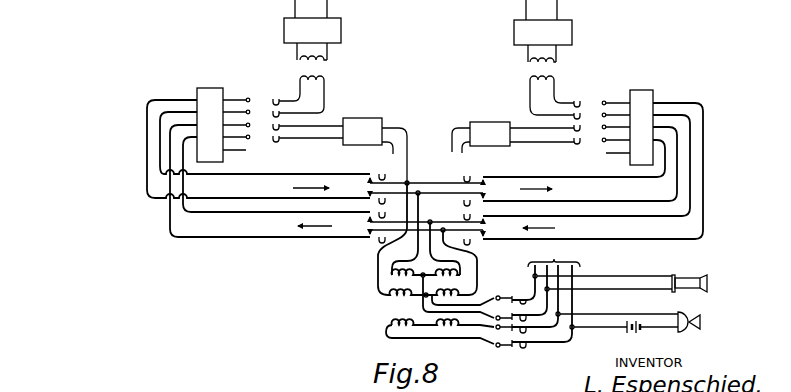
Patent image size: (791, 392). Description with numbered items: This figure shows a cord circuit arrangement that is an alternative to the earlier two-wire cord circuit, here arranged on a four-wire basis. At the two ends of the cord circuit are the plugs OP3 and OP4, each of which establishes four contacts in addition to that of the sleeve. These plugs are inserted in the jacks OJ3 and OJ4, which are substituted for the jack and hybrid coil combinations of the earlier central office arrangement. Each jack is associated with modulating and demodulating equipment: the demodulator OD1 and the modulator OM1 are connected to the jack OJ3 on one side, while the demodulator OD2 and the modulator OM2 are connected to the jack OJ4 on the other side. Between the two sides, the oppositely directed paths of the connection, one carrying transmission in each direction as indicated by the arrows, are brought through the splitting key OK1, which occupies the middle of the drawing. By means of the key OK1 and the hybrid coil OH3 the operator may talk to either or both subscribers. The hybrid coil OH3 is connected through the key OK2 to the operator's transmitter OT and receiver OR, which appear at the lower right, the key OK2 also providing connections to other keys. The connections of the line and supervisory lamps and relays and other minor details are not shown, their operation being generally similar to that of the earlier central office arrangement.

The demodulator OD1 is at (341, 31).
The demodulator OD2 is at (572, 33).
The plug OP3 is at (205, 92).
The plug OP4 is at (637, 95).
The jack OJ3 is at (271, 134).
The jack OJ4 is at (581, 136).
The modulator OM1 is at (351, 146).
The modulator OM2 is at (487, 146).
The splitting key OK1 is at (426, 234).
The key OK2 is at (532, 322).
The hybrid coil OH3 is at (393, 286).
The operator's receiver OR is at (713, 283).
The operator's transmitter OT is at (705, 321).